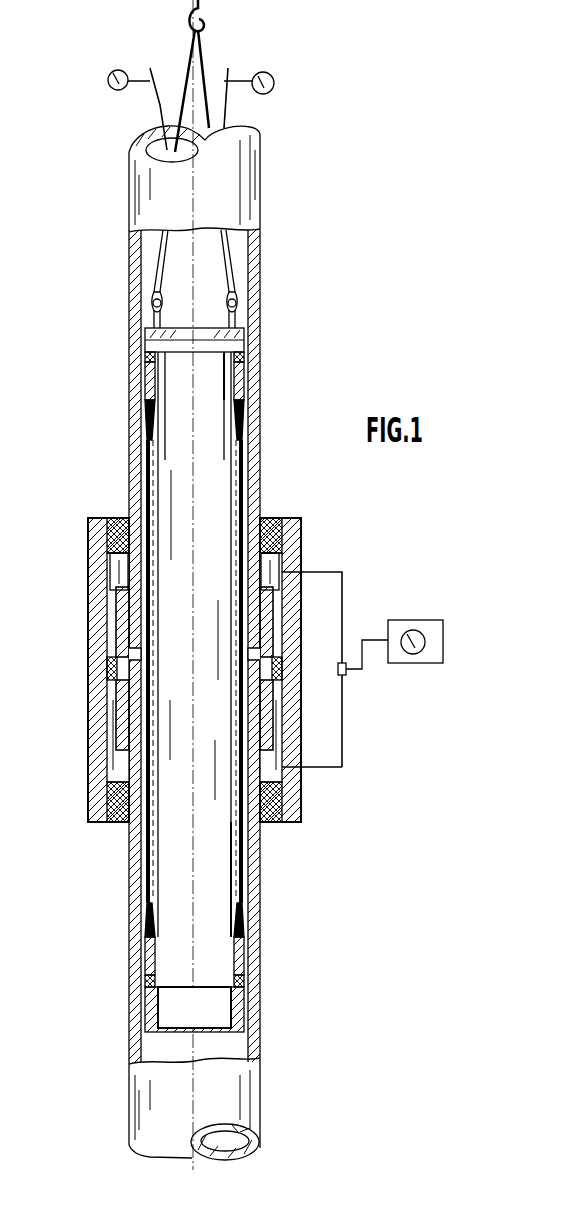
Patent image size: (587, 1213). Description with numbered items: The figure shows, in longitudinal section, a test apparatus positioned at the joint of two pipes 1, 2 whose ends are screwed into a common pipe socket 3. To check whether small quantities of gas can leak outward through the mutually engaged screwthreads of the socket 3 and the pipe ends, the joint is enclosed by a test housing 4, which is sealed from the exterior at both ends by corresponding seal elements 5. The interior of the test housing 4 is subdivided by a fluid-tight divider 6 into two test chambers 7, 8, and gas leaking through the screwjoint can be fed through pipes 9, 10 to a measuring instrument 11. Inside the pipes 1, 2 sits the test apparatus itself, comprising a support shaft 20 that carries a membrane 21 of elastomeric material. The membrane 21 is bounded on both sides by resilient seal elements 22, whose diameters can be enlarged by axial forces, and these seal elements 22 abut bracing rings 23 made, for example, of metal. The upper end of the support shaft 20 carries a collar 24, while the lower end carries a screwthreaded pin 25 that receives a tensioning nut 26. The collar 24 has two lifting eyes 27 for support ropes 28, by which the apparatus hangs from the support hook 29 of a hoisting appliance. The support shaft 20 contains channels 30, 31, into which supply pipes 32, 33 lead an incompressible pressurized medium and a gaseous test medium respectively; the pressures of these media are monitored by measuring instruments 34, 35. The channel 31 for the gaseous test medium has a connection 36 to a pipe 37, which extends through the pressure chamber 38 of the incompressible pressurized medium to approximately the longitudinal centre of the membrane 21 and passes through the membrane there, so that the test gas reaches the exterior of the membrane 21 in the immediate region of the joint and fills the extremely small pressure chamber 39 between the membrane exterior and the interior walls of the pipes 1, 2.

The pipe 1 is at (262, 268).
The pipe 2 is at (127, 980).
The pipe socket 3 is at (128, 634).
The test housing 4 is at (90, 535).
The seal element 5 is at (118, 518).
The fluid-tight divider 6 is at (108, 690).
The test chamber 7 is at (117, 572).
The test chamber 8 is at (116, 722).
The pipe 9 is at (348, 583).
The pipe 10 is at (328, 770).
The measuring instrument 11 is at (443, 636).
The support shaft 20 is at (215, 483).
The membrane 21 is at (250, 887).
The resilient seal element 22 is at (244, 373).
The bracing ring 23 is at (145, 357).
The collar 24 is at (244, 336).
The screwthreaded pin 25 is at (232, 1022).
The tensioning nut 26 is at (152, 1030).
The lifting eye 27 is at (152, 316).
The support rope 28 is at (233, 255).
The support hook 29 is at (210, 17).
The channel 30 is at (150, 397).
The channel 31 is at (224, 397).
The supply pipe 32 is at (160, 103).
The supply pipe 33 is at (228, 72).
The measuring instrument 34 is at (108, 78).
The measuring instrument 35 is at (274, 86).
The connection 36 is at (229, 458).
The pipe 37 is at (236, 503).
The pressure chamber 38 is at (150, 865).
The pressure chamber 39 is at (244, 863).